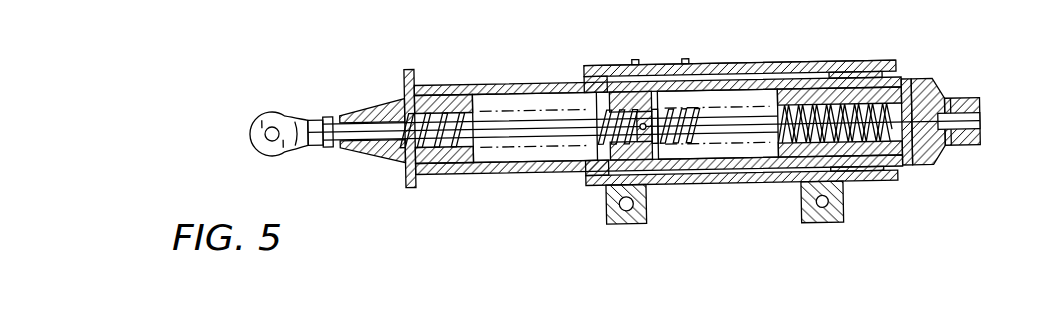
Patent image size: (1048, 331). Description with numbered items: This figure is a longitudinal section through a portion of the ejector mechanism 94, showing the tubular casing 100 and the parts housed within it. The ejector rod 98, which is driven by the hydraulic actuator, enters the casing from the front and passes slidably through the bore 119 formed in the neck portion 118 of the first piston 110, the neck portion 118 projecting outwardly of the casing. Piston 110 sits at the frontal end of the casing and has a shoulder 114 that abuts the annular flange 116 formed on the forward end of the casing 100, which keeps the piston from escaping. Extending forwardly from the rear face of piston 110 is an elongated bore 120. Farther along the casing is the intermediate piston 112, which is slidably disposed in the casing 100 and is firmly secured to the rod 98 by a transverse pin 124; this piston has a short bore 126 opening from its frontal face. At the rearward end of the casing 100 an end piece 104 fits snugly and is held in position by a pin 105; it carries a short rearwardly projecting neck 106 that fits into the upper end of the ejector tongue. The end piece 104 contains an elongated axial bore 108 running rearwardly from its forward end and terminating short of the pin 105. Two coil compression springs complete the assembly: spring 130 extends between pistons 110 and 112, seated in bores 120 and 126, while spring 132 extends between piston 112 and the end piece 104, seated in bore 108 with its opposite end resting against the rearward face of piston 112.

The ejector mechanism 94 is at (611, 56).
The rod 98 is at (351, 145).
The tubular casing 100 is at (492, 86).
The end piece 104 is at (928, 162).
The pin 105 is at (905, 82).
The neck 106 is at (978, 143).
The bore 108 is at (803, 100).
The piston 110 is at (466, 174).
The intermediate piston 112 is at (639, 98).
The shoulder 114 is at (427, 168).
The annular flange 116 is at (407, 188).
The neck portion 118 is at (355, 108).
The bore 119 is at (378, 147).
The bore 120 is at (420, 98).
The transverse pin 124 is at (661, 160).
The bore 126 is at (606, 112).
The coil compression spring 130 is at (527, 145).
The coil spring 132 is at (692, 150).